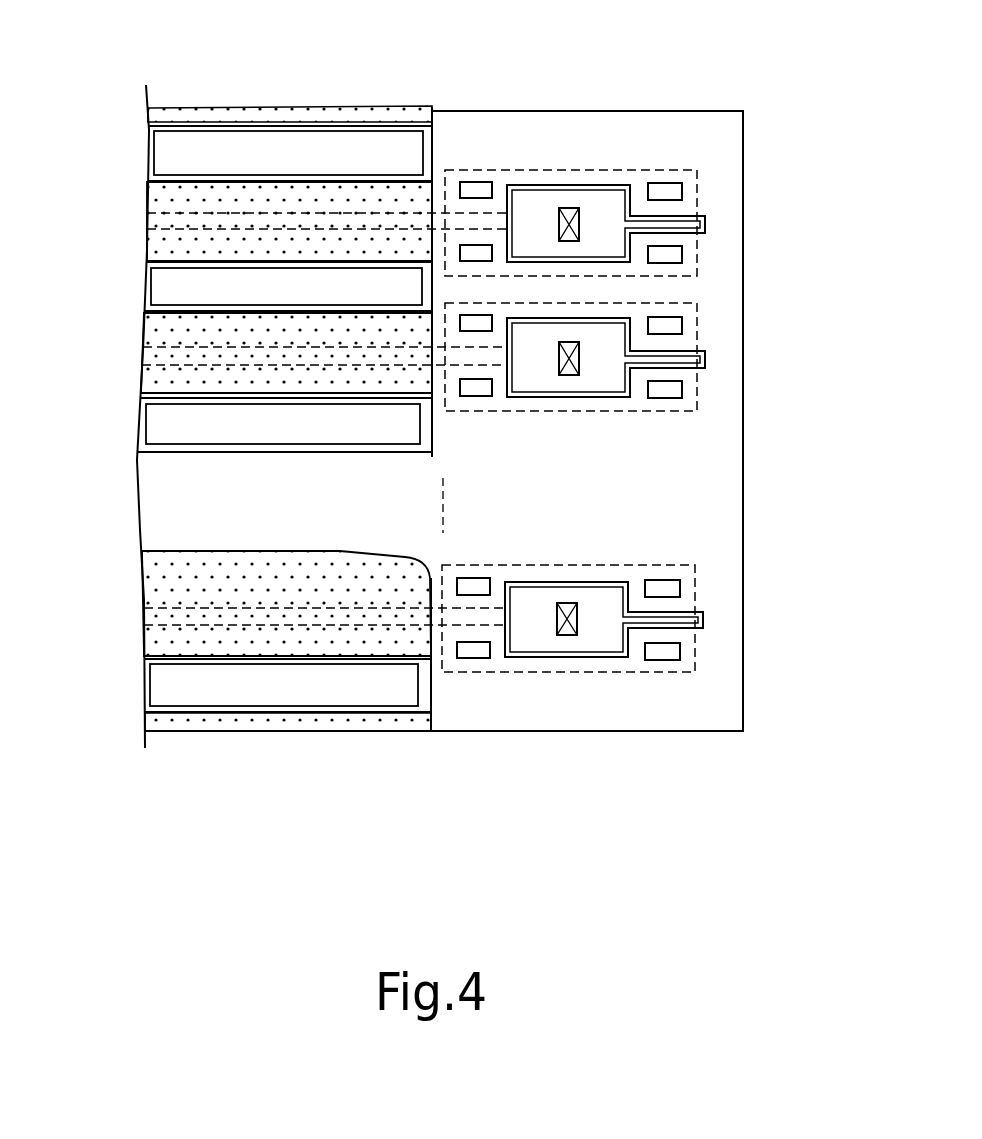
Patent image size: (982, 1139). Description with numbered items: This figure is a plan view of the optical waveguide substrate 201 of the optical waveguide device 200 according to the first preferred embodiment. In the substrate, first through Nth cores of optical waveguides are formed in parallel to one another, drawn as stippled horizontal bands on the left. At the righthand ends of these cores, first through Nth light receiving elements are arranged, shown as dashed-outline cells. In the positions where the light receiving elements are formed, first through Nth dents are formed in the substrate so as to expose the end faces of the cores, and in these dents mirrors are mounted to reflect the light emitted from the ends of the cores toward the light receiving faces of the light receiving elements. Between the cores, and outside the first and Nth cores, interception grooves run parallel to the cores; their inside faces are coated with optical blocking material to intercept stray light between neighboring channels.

The optical waveguide device 200 is at (770, 172).
The optical waveguide substrate 201 is at (457, 110).